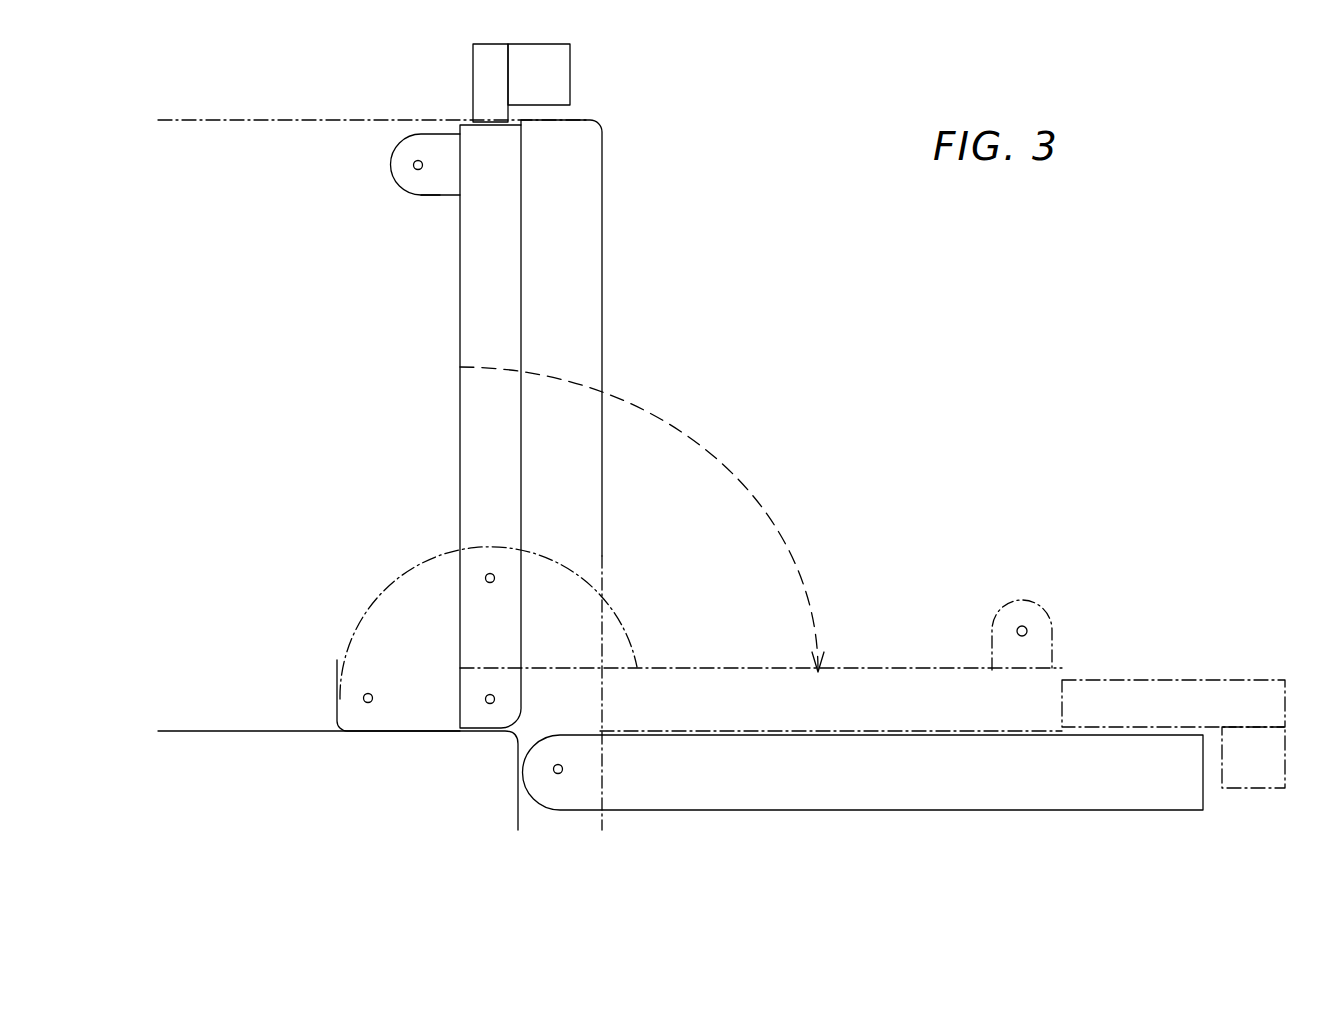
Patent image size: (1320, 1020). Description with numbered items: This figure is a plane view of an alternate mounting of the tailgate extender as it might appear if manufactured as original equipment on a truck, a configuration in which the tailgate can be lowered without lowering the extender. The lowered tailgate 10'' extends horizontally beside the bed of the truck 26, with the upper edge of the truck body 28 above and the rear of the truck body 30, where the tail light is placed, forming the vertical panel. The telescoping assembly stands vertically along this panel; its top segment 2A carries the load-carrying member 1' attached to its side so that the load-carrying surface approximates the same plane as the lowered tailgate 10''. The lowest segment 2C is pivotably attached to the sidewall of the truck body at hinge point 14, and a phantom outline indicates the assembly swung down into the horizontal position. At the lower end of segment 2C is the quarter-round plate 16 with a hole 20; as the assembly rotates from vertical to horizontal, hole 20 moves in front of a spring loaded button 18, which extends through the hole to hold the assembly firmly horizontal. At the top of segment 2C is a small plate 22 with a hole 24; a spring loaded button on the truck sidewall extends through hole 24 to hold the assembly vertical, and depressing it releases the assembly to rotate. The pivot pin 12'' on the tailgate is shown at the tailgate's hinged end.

The upper edge of the truck body 28 is at (294, 118).
The top segment 2A is at (470, 80).
The load-carrying member 1' is at (591, 74).
The rear of the truck body 30 is at (603, 247).
The lowest segment 2C is at (458, 300).
The hole 24 is at (412, 165).
The small plate 22 is at (417, 196).
The quarter-round plate 16 is at (398, 570).
The spring loaded button 18 is at (490, 572).
The hole 20 is at (368, 688).
The hinge point 14 is at (490, 706).
The bed of the truck 26 is at (200, 728).
The lowered tailgate 10'' is at (863, 798).
The bar pivot pin 12'' is at (604, 818).